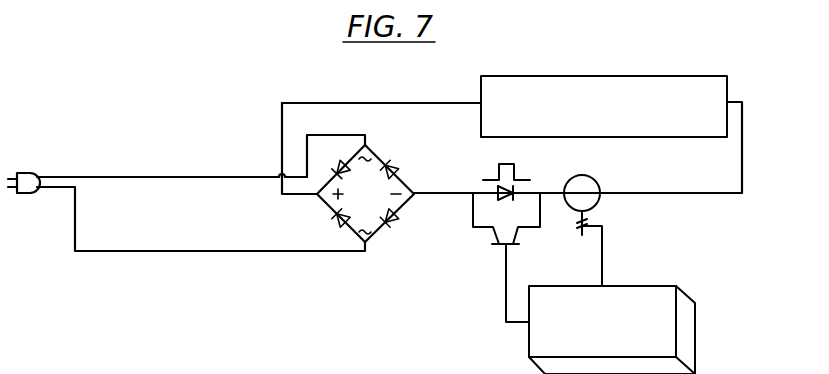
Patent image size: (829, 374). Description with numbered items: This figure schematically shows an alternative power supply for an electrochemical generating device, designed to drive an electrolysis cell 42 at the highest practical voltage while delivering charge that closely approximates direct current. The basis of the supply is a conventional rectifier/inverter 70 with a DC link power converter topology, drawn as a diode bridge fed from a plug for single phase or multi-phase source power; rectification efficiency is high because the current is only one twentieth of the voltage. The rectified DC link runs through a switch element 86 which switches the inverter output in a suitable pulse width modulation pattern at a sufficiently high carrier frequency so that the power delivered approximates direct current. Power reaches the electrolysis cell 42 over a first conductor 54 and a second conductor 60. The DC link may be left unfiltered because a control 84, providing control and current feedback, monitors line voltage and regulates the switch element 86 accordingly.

The electrolysis cell 42 is at (629, 76).
The first conductor 54 is at (480, 98).
The second conductor 60 is at (729, 102).
The rectifier/inverter 70 is at (370, 238).
The control 84 is at (662, 283).
The switch element 86 is at (480, 232).